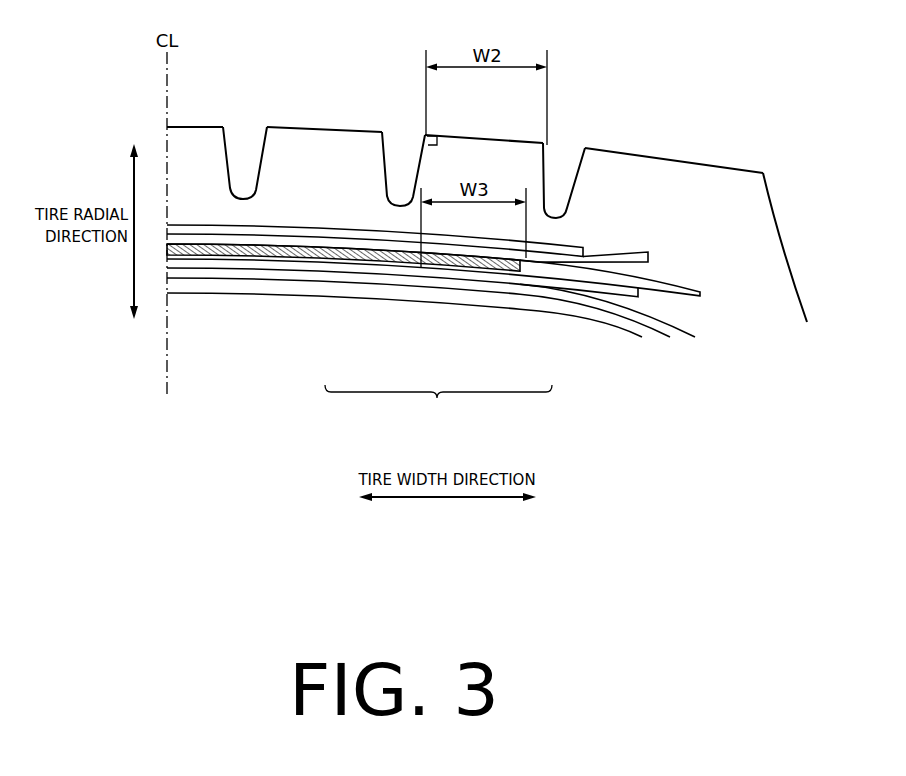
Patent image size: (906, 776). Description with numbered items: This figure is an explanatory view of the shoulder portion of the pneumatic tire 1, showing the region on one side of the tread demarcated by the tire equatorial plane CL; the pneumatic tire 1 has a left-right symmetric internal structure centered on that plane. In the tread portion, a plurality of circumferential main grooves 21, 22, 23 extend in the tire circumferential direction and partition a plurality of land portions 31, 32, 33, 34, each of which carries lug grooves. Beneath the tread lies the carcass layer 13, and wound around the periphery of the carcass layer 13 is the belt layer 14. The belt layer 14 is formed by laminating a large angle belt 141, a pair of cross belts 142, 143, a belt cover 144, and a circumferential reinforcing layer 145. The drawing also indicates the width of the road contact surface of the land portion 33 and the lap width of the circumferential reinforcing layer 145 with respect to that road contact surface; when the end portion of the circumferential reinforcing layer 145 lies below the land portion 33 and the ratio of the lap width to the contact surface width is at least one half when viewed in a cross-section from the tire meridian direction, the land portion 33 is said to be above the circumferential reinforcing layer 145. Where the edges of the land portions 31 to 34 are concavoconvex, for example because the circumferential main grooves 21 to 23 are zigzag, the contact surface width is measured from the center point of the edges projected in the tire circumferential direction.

The pneumatic tire 1 is at (706, 66).
The carcass layer 13 is at (587, 306).
The belt layer 14 is at (438, 405).
The large angle belt 141 is at (542, 289).
The cross belt 142 is at (497, 274).
The cross belt 143 is at (445, 253).
The belt cover 144 is at (385, 238).
The circumferential reinforcing layer 145 is at (347, 258).
The circumferential main groove 21 is at (243, 140).
The circumferential main groove 22 is at (403, 147).
The circumferential main groove 23 is at (563, 157).
The land portion 31 is at (190, 125).
The land portion 32 is at (323, 128).
The land portion 33 is at (482, 137).
The land portion 34 is at (670, 157).